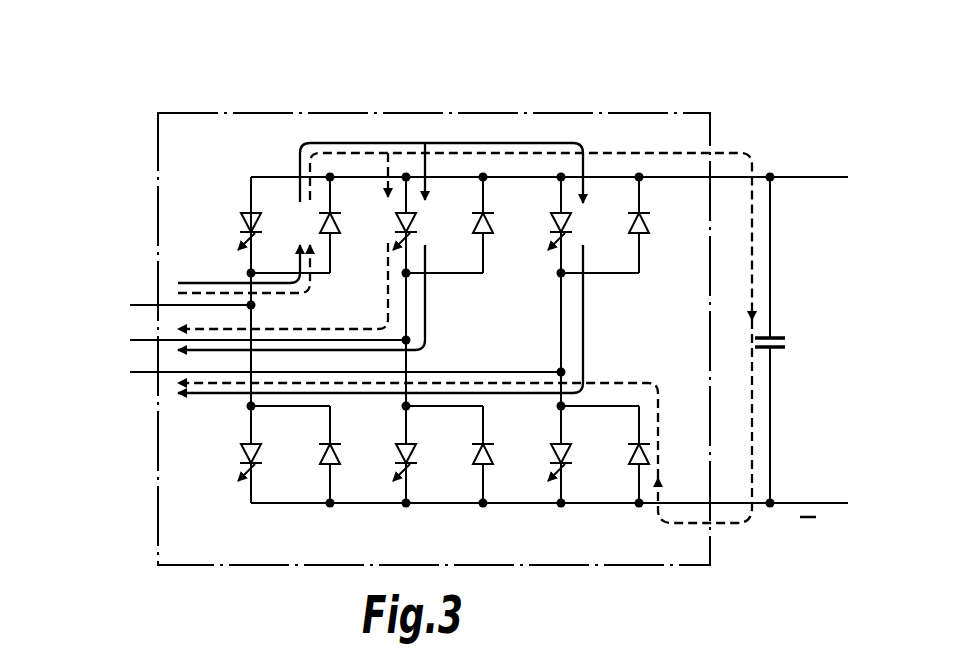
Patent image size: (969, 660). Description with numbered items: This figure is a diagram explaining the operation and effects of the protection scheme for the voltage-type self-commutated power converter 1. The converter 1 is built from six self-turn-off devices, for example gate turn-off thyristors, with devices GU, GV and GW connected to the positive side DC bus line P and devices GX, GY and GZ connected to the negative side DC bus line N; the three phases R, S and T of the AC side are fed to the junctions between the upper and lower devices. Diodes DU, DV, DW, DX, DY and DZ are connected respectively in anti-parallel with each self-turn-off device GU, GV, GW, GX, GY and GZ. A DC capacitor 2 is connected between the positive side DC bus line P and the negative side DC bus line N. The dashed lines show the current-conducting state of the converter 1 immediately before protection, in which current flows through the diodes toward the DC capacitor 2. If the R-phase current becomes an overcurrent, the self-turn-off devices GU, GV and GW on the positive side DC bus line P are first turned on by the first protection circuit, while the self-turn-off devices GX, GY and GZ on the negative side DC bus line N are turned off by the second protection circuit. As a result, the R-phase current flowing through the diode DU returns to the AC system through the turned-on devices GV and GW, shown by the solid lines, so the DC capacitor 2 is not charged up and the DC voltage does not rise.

The converter 1 is at (405, 90).
The DC capacitor 2 is at (776, 355).
The self-turn-off device GU is at (238, 216).
The self-turn-off device GV is at (382, 216).
The self-turn-off device GW is at (544, 217).
The self-turn-off device GX is at (237, 447).
The self-turn-off device GY is at (392, 447).
The self-turn-off device GZ is at (547, 448).
The diode DU is at (346, 239).
The diode DV is at (499, 240).
The diode DW is at (656, 240).
The diode DX is at (346, 468).
The diode DY is at (499, 468).
The diode DZ is at (664, 468).
The positive side DC bus line P is at (817, 178).
The negative side DC bus line N is at (820, 500).